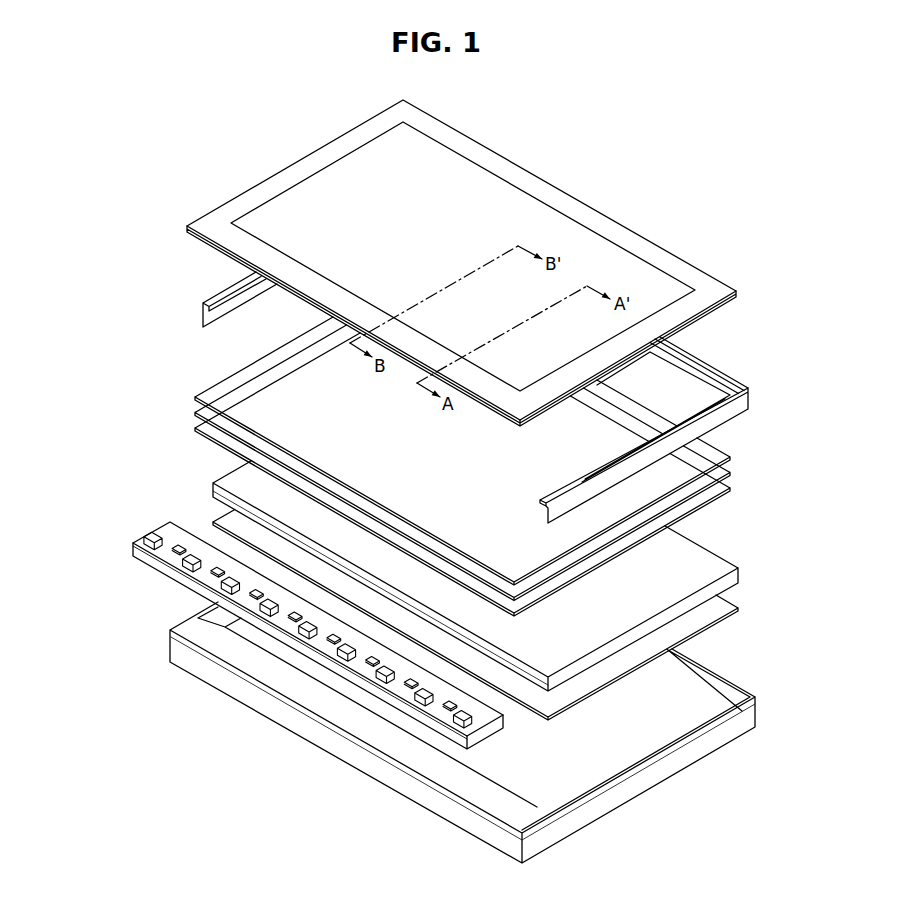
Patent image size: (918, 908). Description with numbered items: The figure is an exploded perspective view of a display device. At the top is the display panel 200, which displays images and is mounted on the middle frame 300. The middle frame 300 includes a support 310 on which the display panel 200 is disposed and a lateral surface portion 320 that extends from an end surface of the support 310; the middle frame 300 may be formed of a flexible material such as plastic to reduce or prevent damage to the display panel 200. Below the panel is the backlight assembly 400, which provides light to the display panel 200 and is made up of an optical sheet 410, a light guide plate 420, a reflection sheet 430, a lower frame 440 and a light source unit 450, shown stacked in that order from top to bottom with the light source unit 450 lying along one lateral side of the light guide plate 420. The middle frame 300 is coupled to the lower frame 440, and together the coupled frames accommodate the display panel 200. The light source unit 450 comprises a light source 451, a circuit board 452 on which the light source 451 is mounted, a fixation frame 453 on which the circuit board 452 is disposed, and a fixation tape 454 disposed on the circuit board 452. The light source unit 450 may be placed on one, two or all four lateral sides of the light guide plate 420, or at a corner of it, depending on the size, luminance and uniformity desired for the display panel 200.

The display panel 200 is at (693, 311).
The middle frame 300 is at (525, 397).
The support 310 is at (700, 372).
The lateral surface portion 320 is at (718, 414).
The backlight assembly 400 is at (436, 590).
The optical sheet 410 is at (794, 470).
The light guide plate 420 is at (794, 556).
The reflection sheet 430 is at (794, 599).
The lower frame 440 is at (794, 674).
The light source unit 450 is at (268, 626).
The light source 451 is at (155, 527).
The circuit board 452 is at (137, 538).
The fixation frame 453 is at (148, 565).
The fixation tape 454 is at (177, 545).